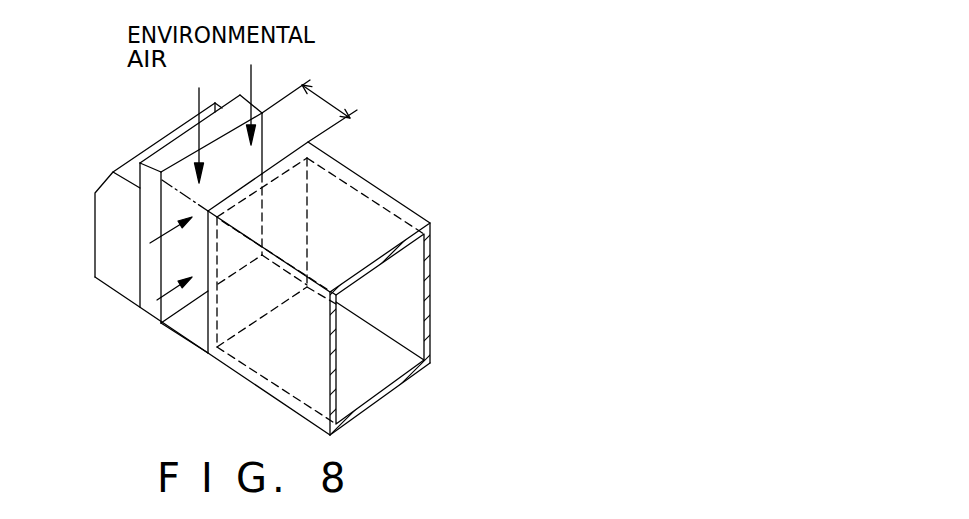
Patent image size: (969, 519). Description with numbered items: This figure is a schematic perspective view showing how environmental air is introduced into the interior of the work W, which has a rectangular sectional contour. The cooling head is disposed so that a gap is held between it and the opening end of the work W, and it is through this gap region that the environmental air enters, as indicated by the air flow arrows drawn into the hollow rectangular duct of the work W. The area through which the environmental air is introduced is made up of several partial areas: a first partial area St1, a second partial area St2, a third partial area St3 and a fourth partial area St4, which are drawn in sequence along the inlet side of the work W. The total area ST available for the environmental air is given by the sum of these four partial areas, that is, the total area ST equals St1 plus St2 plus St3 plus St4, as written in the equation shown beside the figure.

The first partial area St1 is at (163, 263).
The second partial area St2 is at (185, 172).
The third partial area St3 is at (288, 190).
The fourth partial area St4 is at (197, 320).
The total area ST is at (287, 142).
The work W is at (270, 355).